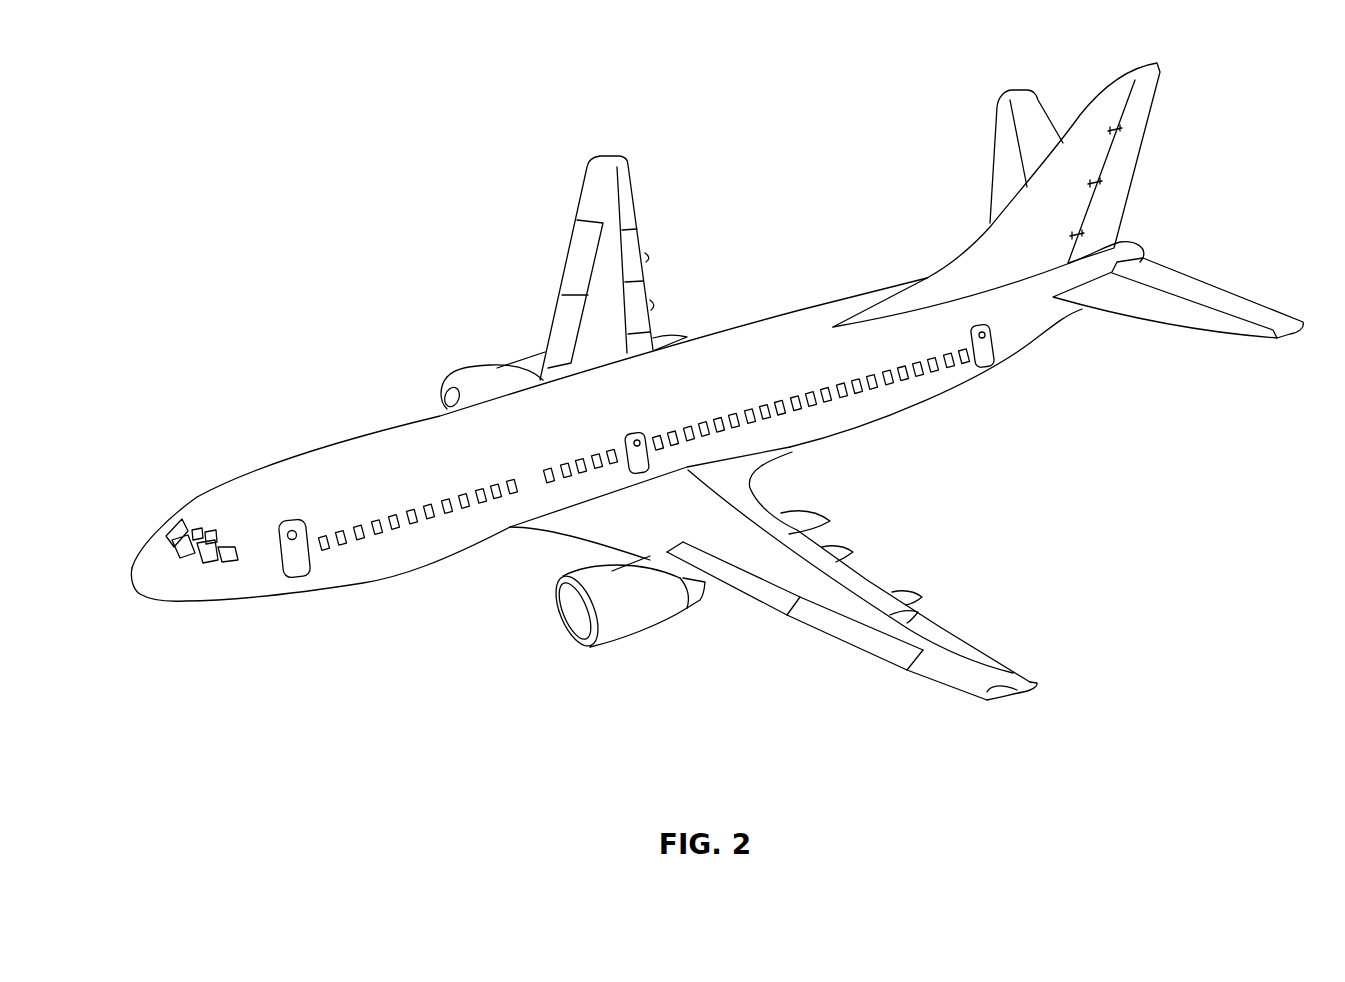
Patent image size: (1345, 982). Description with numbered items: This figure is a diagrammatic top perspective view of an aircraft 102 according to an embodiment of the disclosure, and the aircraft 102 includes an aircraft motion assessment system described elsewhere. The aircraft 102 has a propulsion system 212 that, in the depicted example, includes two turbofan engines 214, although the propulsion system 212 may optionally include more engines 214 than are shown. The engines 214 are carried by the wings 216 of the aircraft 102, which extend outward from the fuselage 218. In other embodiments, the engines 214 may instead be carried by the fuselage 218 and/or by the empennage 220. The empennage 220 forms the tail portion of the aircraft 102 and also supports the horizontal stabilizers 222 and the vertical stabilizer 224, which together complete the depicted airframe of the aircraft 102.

The aircraft 102 is at (400, 128).
The propulsion system 212 is at (525, 703).
The turbofan engines 214 is at (478, 371).
The wings 216 is at (607, 163).
The fuselage 218 is at (372, 554).
The empennage 220 is at (875, 268).
The horizontal stabilizers 222 is at (1027, 97).
The vertical stabilizer 224 is at (1120, 77).